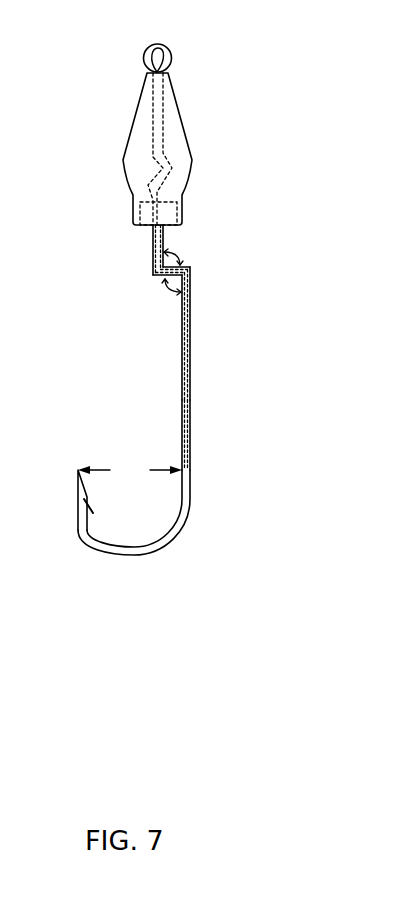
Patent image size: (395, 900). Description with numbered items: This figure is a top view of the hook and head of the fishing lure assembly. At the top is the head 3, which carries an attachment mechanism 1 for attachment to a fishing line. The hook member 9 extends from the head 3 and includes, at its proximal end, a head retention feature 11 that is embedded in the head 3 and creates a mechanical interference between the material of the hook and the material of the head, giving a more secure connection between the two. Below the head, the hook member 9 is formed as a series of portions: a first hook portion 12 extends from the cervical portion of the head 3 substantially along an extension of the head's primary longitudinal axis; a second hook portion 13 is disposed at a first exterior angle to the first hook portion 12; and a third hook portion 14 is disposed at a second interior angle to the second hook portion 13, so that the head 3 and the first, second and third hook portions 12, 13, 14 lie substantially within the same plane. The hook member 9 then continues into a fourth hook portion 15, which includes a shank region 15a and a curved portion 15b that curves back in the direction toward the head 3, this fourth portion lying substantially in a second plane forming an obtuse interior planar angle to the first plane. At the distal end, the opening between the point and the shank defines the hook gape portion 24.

The attachment mechanism 1 is at (172, 53).
The head 3 is at (156, 133).
The head retention feature 11 is at (145, 183).
The first hook portion 12 is at (163, 238).
The second hook portion 13 is at (155, 277).
The third hook portion 14 is at (190, 300).
The hook member 9 is at (186, 417).
The hook shank 15a is at (190, 460).
The fourth hook portion 15 is at (207, 517).
The curved portion 15b is at (137, 552).
The hook gape portion 24 is at (182, 435).